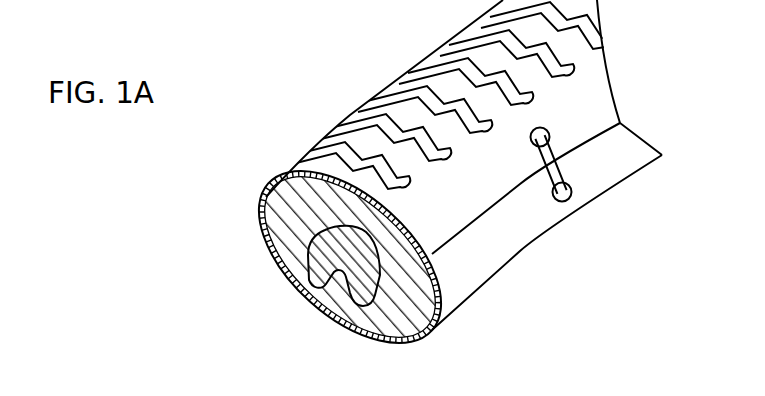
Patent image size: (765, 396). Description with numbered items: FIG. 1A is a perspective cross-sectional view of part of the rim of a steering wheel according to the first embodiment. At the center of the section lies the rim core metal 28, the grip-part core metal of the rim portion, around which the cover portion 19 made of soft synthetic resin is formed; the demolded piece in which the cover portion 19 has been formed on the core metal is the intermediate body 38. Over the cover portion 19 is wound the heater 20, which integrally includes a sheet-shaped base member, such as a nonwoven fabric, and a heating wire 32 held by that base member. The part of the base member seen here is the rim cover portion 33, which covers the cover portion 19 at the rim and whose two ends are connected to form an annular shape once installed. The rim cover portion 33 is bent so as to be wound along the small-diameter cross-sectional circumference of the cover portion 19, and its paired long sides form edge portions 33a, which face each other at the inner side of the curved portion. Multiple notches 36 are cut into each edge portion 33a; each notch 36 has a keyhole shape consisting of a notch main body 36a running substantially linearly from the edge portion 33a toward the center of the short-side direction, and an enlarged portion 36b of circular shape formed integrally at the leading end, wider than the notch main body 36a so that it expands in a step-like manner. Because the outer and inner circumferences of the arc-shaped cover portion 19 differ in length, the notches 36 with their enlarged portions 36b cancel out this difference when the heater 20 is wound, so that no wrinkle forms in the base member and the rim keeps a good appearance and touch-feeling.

The cover portion 19 is at (435, 328).
The heater 20 is at (571, 394).
The rim core metal 28 is at (368, 306).
The heating wire 32 is at (308, 153).
The rim cover portion 33 is at (340, 135).
The edge portions 33a is at (508, 287).
The notch 36 is at (547, 129).
The notch main body 36a is at (621, 123).
The enlarged portion 36b is at (550, 133).
The intermediate body 38 is at (313, 293).